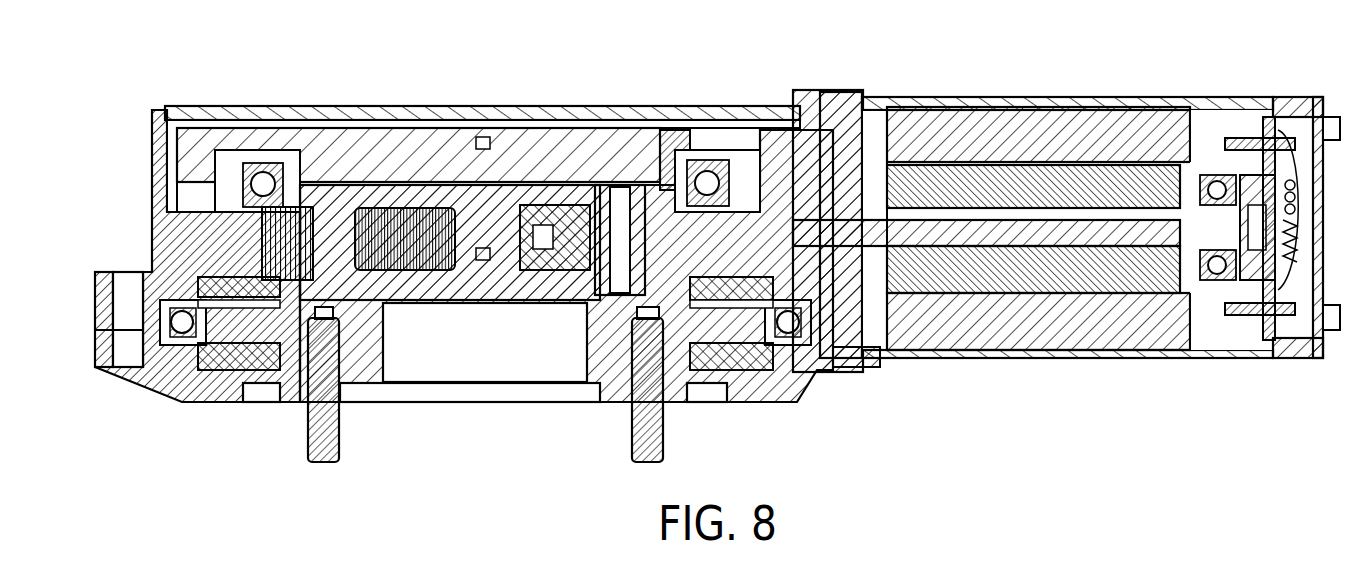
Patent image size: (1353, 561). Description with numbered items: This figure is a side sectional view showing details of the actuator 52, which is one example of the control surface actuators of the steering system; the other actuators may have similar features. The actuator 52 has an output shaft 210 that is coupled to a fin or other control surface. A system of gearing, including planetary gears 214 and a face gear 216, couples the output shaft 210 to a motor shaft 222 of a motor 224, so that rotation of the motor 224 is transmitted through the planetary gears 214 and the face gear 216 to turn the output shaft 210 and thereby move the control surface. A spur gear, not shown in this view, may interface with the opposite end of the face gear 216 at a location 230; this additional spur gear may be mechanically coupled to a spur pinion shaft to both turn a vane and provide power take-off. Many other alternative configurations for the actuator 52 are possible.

The actuator 52 is at (224, 80).
The output shaft 210 is at (357, 353).
The planetary gears 214 is at (548, 242).
The face gear 216 is at (357, 157).
The motor shaft 222 is at (1013, 232).
The motor 224 is at (1117, 183).
The location 230 is at (122, 223).